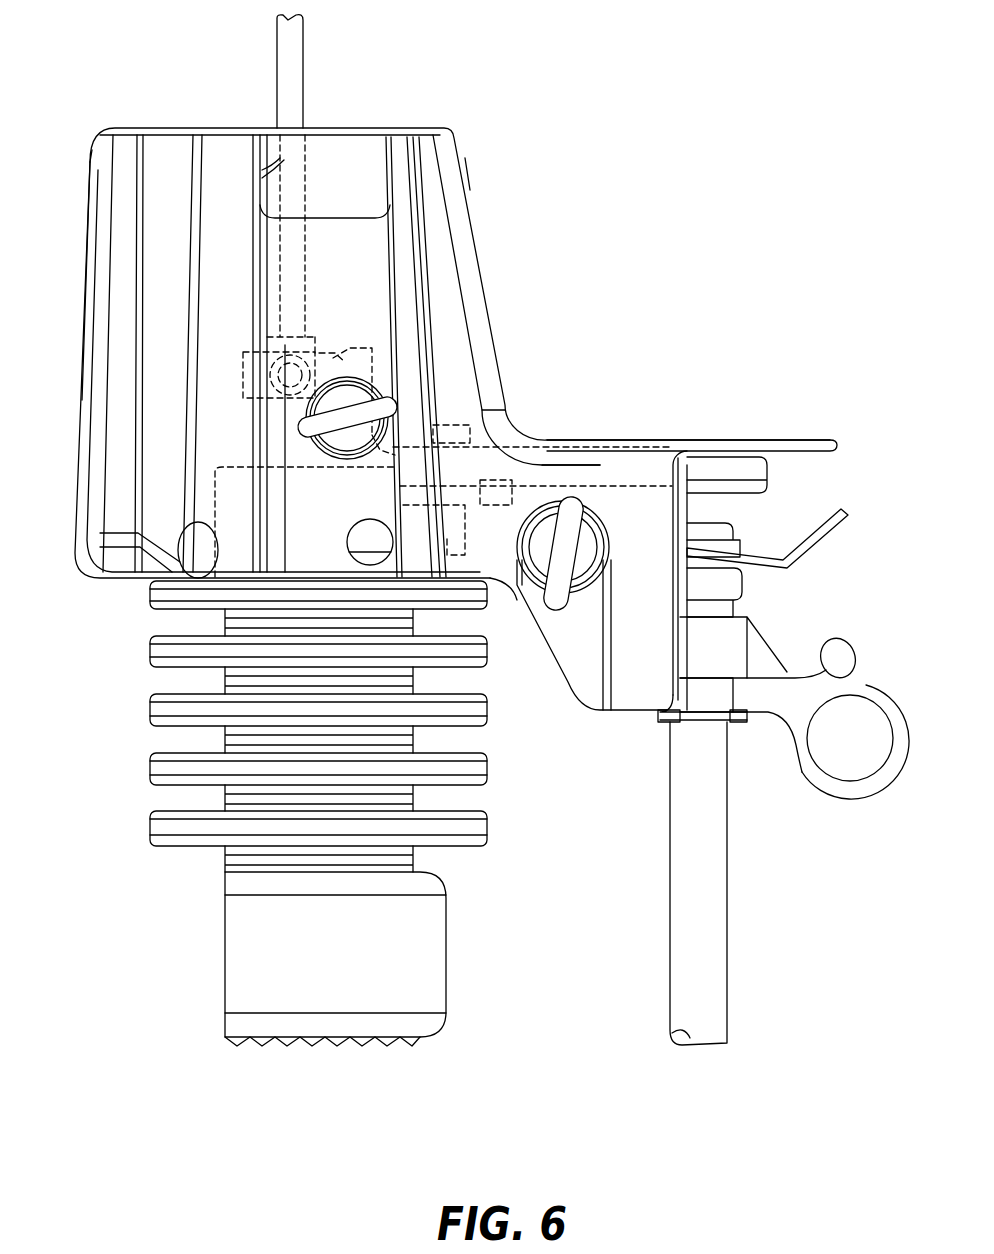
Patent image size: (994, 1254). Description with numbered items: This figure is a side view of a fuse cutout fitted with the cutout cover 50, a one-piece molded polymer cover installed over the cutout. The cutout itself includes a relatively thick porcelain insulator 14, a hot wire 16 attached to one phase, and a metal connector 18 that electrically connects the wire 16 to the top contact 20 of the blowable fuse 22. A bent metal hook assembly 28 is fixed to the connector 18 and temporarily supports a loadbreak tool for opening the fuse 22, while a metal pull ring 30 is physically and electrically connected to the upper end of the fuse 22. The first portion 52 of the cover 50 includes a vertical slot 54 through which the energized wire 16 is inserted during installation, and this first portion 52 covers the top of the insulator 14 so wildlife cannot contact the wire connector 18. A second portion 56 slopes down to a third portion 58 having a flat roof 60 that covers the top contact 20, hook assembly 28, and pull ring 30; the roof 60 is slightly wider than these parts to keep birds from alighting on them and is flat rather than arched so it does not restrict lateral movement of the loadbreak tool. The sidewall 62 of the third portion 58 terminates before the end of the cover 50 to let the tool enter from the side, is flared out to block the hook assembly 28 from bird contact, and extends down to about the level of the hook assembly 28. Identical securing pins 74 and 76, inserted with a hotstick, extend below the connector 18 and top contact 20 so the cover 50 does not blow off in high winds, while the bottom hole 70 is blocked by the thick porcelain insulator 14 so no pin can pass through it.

The insulator 14 is at (150, 657).
The hot wire 16 is at (305, 83).
The metal connector 18 is at (333, 340).
The top contact 20 is at (808, 540).
The blowable fuse 22 is at (727, 885).
The hook assembly 28 is at (850, 648).
The pull ring 30 is at (846, 800).
The cutout cover 50 is at (576, 249).
The first portion 52 is at (366, 104).
The vertical slot 54 is at (92, 150).
The second portion 56 is at (465, 158).
The third portion 58 is at (698, 396).
The flat roof 60 is at (765, 437).
The sidewall 62 is at (572, 685).
The through-hole 70 is at (382, 540).
The securing pin 74 is at (557, 598).
The securing pin 76 is at (387, 410).